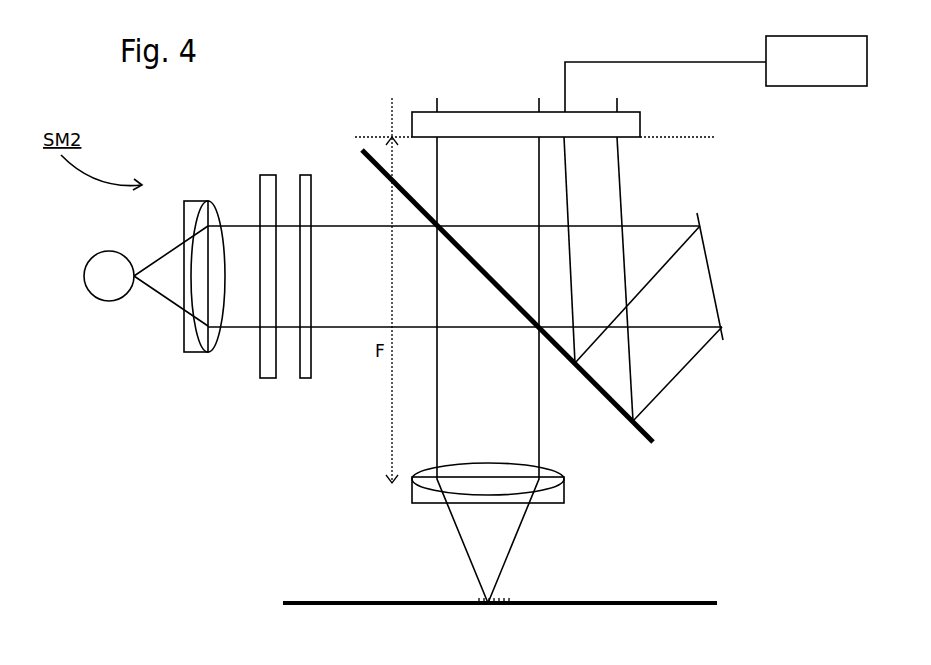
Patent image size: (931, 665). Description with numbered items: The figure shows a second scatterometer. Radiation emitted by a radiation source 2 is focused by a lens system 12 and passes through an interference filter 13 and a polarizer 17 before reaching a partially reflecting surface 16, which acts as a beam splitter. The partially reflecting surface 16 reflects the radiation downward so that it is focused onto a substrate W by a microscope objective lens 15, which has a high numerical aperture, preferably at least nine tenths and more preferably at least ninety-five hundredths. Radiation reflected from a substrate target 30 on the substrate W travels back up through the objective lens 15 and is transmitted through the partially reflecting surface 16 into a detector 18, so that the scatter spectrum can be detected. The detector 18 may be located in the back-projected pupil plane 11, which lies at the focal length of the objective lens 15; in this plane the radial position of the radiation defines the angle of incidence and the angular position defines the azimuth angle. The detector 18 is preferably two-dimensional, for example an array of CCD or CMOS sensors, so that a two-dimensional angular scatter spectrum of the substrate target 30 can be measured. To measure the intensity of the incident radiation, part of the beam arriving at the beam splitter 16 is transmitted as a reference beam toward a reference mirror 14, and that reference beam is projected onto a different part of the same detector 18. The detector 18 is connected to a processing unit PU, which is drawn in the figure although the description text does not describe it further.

The radiation source 2 is at (109, 276).
The back-projected pupil plane 11 is at (702, 137).
The lens system 12 is at (193, 201).
The interference filter 13 is at (274, 175).
The reference mirror 14 is at (701, 220).
The microscope objective lens 15 is at (412, 493).
The partially reflecting surface 16 is at (637, 433).
The polarizer 17 is at (305, 175).
The detector 18 is at (446, 112).
The substrate target 30 is at (497, 612).
The processing unit PU is at (816, 61).
The substrate W is at (611, 603).